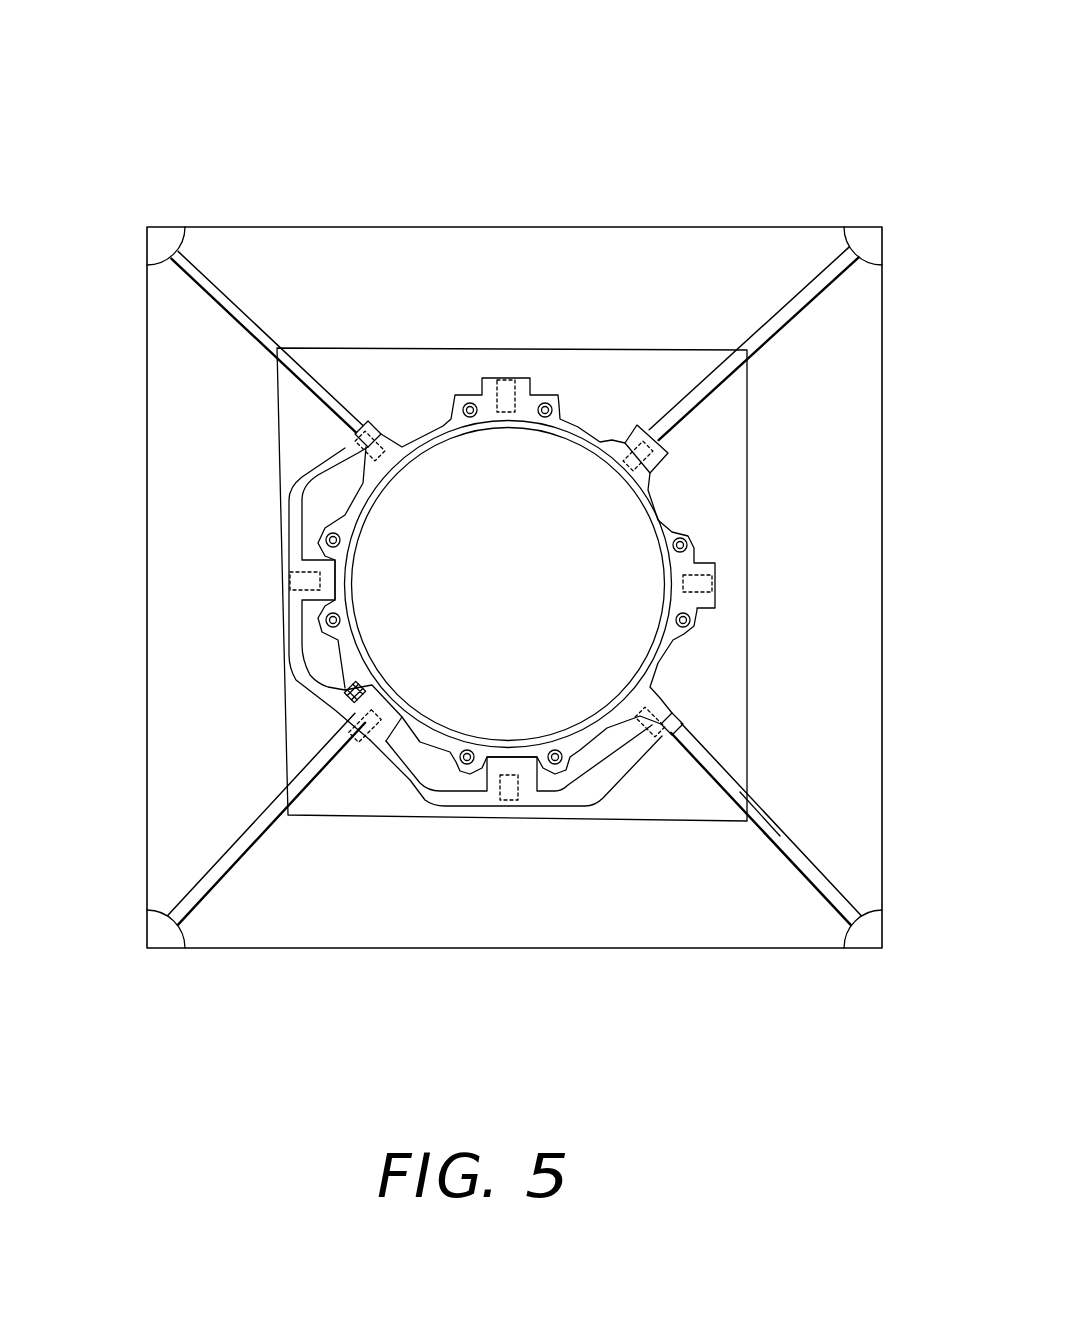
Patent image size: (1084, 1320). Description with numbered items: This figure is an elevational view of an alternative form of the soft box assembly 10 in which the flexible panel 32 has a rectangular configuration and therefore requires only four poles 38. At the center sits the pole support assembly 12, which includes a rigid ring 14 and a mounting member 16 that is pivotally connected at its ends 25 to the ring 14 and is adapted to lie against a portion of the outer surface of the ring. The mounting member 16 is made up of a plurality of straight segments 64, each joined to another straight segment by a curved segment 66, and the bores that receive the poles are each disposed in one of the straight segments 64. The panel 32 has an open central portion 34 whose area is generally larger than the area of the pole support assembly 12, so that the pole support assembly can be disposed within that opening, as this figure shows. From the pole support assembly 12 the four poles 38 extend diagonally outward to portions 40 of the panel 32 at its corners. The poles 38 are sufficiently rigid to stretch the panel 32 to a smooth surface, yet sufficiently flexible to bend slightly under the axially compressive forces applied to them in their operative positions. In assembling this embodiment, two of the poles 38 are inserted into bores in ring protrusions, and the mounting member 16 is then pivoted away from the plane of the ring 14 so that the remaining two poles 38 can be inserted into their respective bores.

The soft box assembly 10 is at (532, 95).
The pole support assembly 12 is at (585, 424).
The rigid ring 14 is at (634, 491).
The mounting member 16 is at (692, 740).
The ends of mounting member 25 is at (366, 422).
The flexible panel 32 is at (660, 242).
The open central portion 34 is at (443, 372).
The poles 38 is at (242, 306).
The portions of the panel 40 is at (162, 225).
The straight segments 64 is at (288, 527).
The curved segment 66 is at (292, 490).